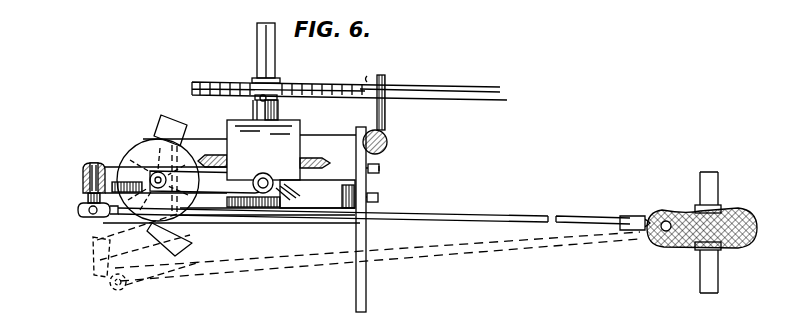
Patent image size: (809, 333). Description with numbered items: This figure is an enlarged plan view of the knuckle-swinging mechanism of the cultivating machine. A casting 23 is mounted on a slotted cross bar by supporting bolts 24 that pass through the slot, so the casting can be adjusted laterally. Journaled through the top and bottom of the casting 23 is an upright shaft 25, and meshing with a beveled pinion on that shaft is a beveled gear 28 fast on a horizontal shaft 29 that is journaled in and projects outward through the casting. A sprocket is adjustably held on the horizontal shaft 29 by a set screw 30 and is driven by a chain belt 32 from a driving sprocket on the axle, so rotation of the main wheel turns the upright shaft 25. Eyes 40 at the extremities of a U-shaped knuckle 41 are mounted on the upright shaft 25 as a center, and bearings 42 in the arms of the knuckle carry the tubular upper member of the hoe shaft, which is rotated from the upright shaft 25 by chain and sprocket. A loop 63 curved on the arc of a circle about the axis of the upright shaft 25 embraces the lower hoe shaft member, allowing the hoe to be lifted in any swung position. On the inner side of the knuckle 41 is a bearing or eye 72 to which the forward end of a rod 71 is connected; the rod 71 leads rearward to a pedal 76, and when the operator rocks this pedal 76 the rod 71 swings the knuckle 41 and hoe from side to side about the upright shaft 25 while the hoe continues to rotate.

The casting 23 is at (333, 188).
The supporting bolt 24 is at (381, 168).
The upright shaft 25 is at (264, 178).
The beveled gear 28 is at (310, 157).
The horizontal shaft 29 is at (262, 44).
The set screw 30 is at (260, 90).
The chain belt 32 is at (337, 92).
The eye 40 is at (212, 189).
The knuckle 41 is at (110, 167).
The bearing 42 is at (157, 177).
The loop 63 is at (165, 116).
The rod 71 is at (309, 221).
The bearing or eye 72 is at (83, 204).
The pedal 76 is at (655, 243).